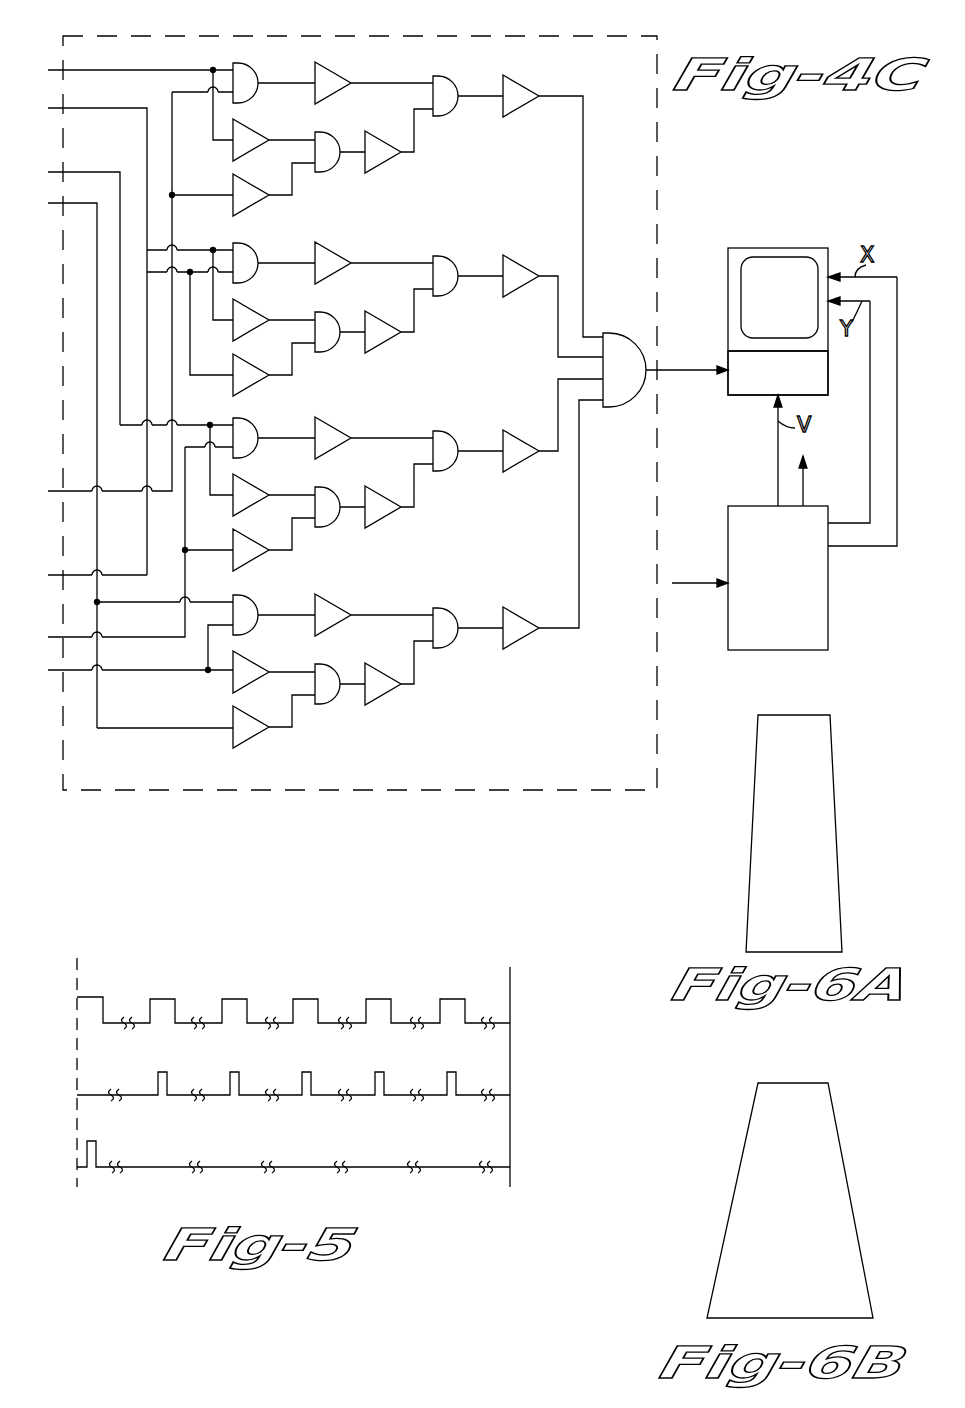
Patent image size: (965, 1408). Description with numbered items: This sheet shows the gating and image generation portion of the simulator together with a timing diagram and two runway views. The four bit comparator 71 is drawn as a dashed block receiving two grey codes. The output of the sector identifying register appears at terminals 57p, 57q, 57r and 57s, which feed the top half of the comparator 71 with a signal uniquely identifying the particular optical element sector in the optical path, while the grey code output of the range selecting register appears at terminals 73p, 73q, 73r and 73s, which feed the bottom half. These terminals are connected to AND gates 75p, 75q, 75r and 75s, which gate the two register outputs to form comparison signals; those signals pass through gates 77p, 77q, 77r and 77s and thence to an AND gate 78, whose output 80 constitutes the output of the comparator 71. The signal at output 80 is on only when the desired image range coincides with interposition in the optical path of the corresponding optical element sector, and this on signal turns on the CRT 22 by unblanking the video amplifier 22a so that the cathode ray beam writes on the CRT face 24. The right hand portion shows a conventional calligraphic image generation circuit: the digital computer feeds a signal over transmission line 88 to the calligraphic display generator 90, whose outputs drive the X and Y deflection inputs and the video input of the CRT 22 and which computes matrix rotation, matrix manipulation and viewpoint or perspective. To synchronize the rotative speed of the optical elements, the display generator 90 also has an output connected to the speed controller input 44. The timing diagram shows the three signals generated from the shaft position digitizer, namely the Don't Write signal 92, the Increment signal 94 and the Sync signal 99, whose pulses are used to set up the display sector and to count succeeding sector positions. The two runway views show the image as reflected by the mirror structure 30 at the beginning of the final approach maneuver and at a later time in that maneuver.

In FIG. 4C, the four bit comparator 71 is at (408, 36).
In FIG. 4C, the terminal 57p is at (121, 70).
In FIG. 4C, the terminal 57q is at (121, 108).
In FIG. 4C, the terminal 57r is at (117, 172).
In FIG. 4C, the terminal 57s is at (107, 196).
In FIG. 4C, the terminal 73p is at (114, 491).
In FIG. 4C, the terminal 73q is at (115, 565).
In FIG. 4C, the terminal 73r is at (150, 637).
In FIG. 4C, the terminal 73s is at (152, 670).
In FIG. 4C, the AND gate 75p is at (238, 70).
In FIG. 4C, the AND gate 75q is at (238, 250).
In FIG. 4C, the AND gate 75r is at (238, 426).
In FIG. 4C, the AND gate 75s is at (238, 605).
In FIG. 4C, the gate 77p is at (440, 88).
In FIG. 4C, the gate 77q is at (440, 264).
In FIG. 4C, the gate 77r is at (438, 445).
In FIG. 4C, the gate 77s is at (438, 616).
In FIG. 4C, the AND gate 78 is at (630, 322).
In FIG. 4C, the comparator output 80 is at (684, 372).
In FIG. 4C, the CRT 22 is at (800, 248).
In FIG. 4C, the CRT face 24 is at (760, 258).
In FIG. 4C, the video amplifier 22a is at (745, 396).
In FIG. 4C, the calligraphic display generator 90 is at (728, 518).
In FIG. 4C, the transmission line 88 is at (688, 584).
In FIG. 4C, the speed controller input 44 is at (803, 482).
In FIG. 5, the Don't Write signal 92 is at (104, 1005).
In FIG. 5, the Increment signal 94 is at (158, 1080).
In FIG. 5, the Sync signal 99 is at (96, 1148).
In FIG. 6A, the mirror structure 30 is at (812, 945).
In FIG. 6B, the mirror structure 30 is at (808, 1310).